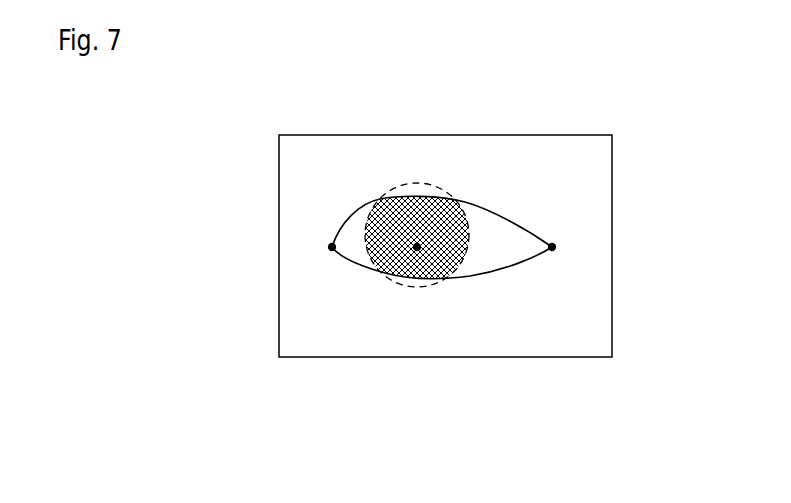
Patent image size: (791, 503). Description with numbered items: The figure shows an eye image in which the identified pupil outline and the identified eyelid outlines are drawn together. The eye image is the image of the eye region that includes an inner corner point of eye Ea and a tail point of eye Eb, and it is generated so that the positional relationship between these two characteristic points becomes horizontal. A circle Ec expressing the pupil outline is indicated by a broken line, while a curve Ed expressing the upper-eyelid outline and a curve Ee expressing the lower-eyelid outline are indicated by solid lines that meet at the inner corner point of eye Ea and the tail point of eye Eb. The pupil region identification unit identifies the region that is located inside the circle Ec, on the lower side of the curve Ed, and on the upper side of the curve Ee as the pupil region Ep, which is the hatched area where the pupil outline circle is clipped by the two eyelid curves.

The inner corner point of eye Ea is at (332, 247).
The tail point of eye Eb is at (552, 247).
The circle expressing the pupil outline Ec is at (422, 183).
The curve expressing the upper-eyelid outline Ed is at (485, 210).
The curve expressing the lower-eyelid outline Ee is at (513, 263).
The pupil region Ep is at (417, 247).